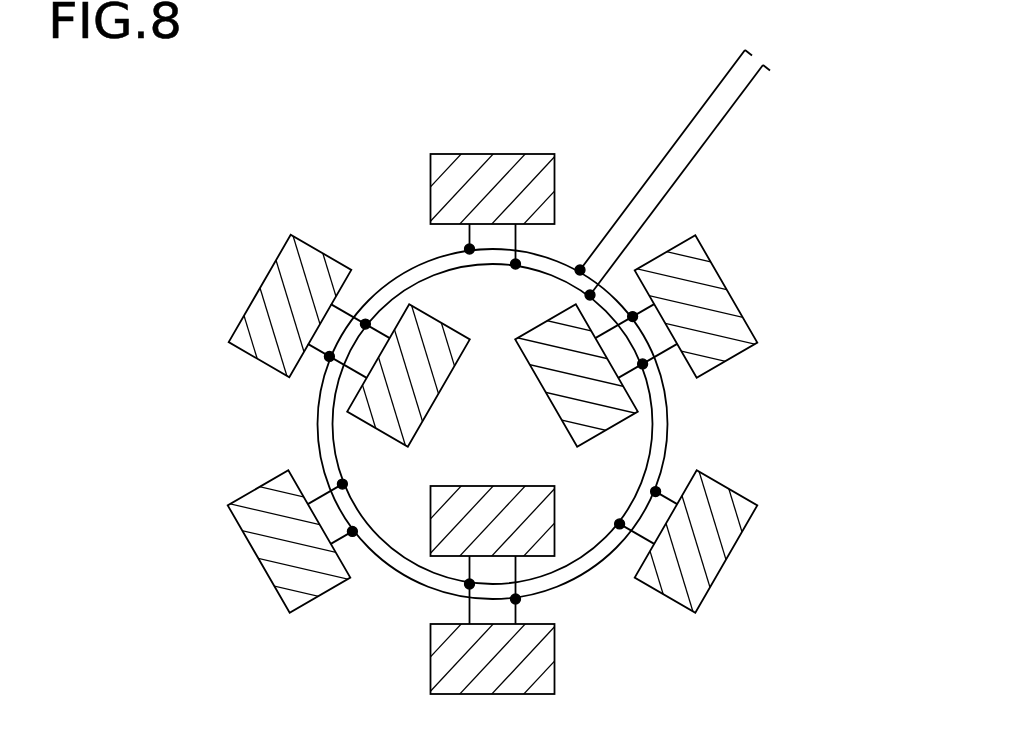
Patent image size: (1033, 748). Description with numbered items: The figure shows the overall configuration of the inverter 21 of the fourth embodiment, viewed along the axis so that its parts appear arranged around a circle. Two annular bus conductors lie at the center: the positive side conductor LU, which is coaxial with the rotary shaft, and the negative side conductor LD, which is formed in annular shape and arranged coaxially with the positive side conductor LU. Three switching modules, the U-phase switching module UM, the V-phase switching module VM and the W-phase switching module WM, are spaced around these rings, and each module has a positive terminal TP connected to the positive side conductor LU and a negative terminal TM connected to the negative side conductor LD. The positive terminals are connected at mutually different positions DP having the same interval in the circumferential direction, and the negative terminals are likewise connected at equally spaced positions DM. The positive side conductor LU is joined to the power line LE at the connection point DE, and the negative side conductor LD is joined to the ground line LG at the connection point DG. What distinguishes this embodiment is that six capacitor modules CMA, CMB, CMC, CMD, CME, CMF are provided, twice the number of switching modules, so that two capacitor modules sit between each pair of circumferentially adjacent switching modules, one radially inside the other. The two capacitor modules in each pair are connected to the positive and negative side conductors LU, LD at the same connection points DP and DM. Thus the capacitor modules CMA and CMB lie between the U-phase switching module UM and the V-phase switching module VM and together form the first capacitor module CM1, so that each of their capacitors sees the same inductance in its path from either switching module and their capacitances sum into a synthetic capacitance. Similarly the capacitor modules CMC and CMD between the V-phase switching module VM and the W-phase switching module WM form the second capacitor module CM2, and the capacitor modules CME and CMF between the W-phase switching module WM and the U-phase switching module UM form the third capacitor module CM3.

The inverter 21 is at (819, 60).
The ground line LG is at (733, 67).
The power line LE is at (750, 88).
The U-phase switching module UM is at (557, 172).
The V-phase switching module VM is at (254, 547).
The W-phase switching module WM is at (687, 608).
The negative terminal TM is at (468, 228).
The positive terminal TP is at (517, 226).
The connection point DG is at (580, 266).
The connection point DE is at (588, 296).
The connection position DP is at (366, 320).
The connection position DM is at (328, 358).
The positive side conductor LU is at (578, 560).
The negative side conductor LD is at (583, 574).
The first capacitor module CM1 is at (317, 341).
The second capacitor module CM2 is at (475, 590).
The third capacitor module CM3 is at (675, 341).
The capacitor module CMA is at (257, 317).
The capacitor module CMB is at (386, 427).
The capacitor module CMC is at (437, 670).
The capacitor module CMD is at (438, 528).
The capacitor module CME is at (732, 318).
The capacitor module CMF is at (596, 425).